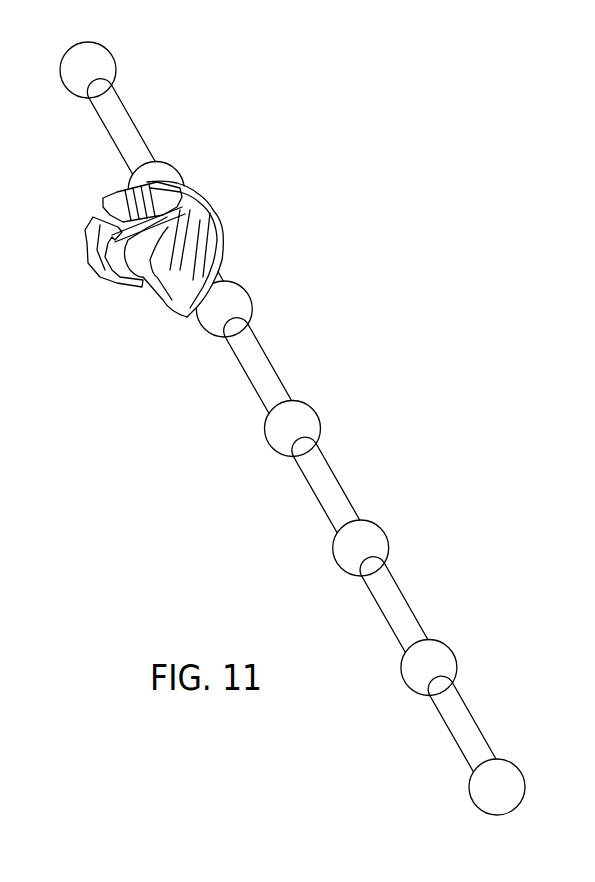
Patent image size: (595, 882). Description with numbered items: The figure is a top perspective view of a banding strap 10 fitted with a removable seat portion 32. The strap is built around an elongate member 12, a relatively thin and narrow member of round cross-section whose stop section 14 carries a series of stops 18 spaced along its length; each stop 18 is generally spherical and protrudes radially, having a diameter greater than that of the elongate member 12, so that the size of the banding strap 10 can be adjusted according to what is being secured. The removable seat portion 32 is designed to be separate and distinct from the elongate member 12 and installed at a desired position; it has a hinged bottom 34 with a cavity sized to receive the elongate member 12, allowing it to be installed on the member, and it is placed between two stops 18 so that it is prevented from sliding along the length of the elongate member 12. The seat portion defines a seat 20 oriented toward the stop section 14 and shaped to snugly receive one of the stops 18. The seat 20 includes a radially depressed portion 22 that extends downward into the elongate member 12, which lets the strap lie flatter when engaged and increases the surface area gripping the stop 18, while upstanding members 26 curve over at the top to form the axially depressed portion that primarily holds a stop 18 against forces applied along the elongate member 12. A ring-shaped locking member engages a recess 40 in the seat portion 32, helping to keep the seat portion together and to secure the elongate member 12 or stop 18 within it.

The banding strap 10 is at (338, 73).
The elongate member 12 is at (417, 619).
The stop section 14 is at (348, 675).
The stop 18 is at (317, 412).
The seat 20 is at (184, 293).
The radially depressed portion 22 is at (150, 282).
The upstanding member 26 is at (93, 233).
The removable seat portion 32 is at (225, 255).
The hinged bottom 34 is at (223, 247).
The recess 40 is at (122, 195).